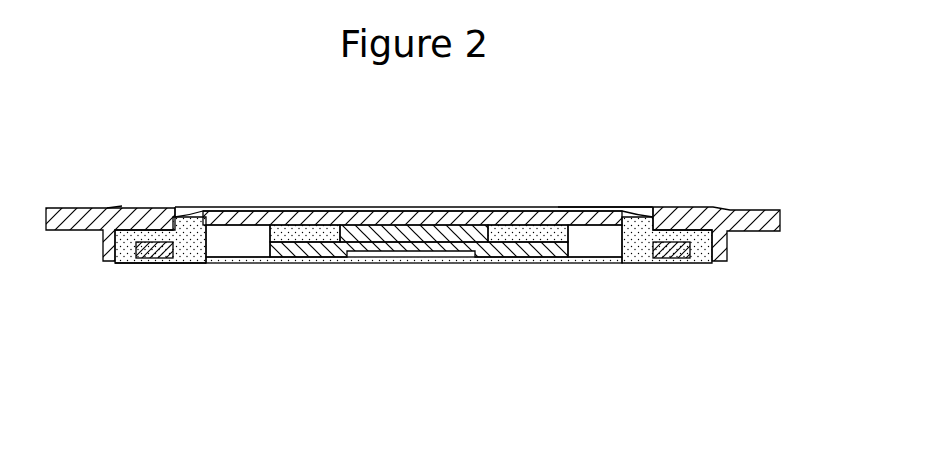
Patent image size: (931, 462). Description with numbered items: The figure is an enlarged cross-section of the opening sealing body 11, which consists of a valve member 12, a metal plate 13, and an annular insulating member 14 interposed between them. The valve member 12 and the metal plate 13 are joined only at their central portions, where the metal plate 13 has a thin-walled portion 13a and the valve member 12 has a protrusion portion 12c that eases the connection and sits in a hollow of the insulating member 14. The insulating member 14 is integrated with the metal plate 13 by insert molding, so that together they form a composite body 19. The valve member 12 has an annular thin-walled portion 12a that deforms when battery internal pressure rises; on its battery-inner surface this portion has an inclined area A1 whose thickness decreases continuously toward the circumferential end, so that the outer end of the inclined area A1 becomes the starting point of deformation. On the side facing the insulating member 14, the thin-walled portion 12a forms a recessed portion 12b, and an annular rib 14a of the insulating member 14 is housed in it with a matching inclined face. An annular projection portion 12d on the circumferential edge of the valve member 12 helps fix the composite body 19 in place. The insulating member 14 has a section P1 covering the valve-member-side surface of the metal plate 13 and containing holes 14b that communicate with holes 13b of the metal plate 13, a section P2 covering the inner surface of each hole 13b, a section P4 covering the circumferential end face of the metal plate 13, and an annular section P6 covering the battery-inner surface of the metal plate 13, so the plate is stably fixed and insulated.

The opening sealing body 11 is at (88, 122).
The valve member 12 is at (752, 208).
The thin-walled portion 12a is at (630, 210).
The recessed portion 12b is at (224, 214).
The protrusion portion 12c is at (398, 238).
The projection portion 12d is at (105, 248).
The metal plate 13 is at (527, 258).
The thin-walled portion 13a is at (427, 262).
The hole 13b is at (232, 258).
The insulating member 14 is at (512, 256).
The rib 14a is at (183, 209).
The hole 14b is at (272, 208).
The composite body 19 is at (562, 315).
The inclined area A1 is at (652, 177).
The section P1 is at (130, 207).
The section P2 is at (192, 263).
The section P4 is at (127, 263).
The section P6 is at (148, 260).